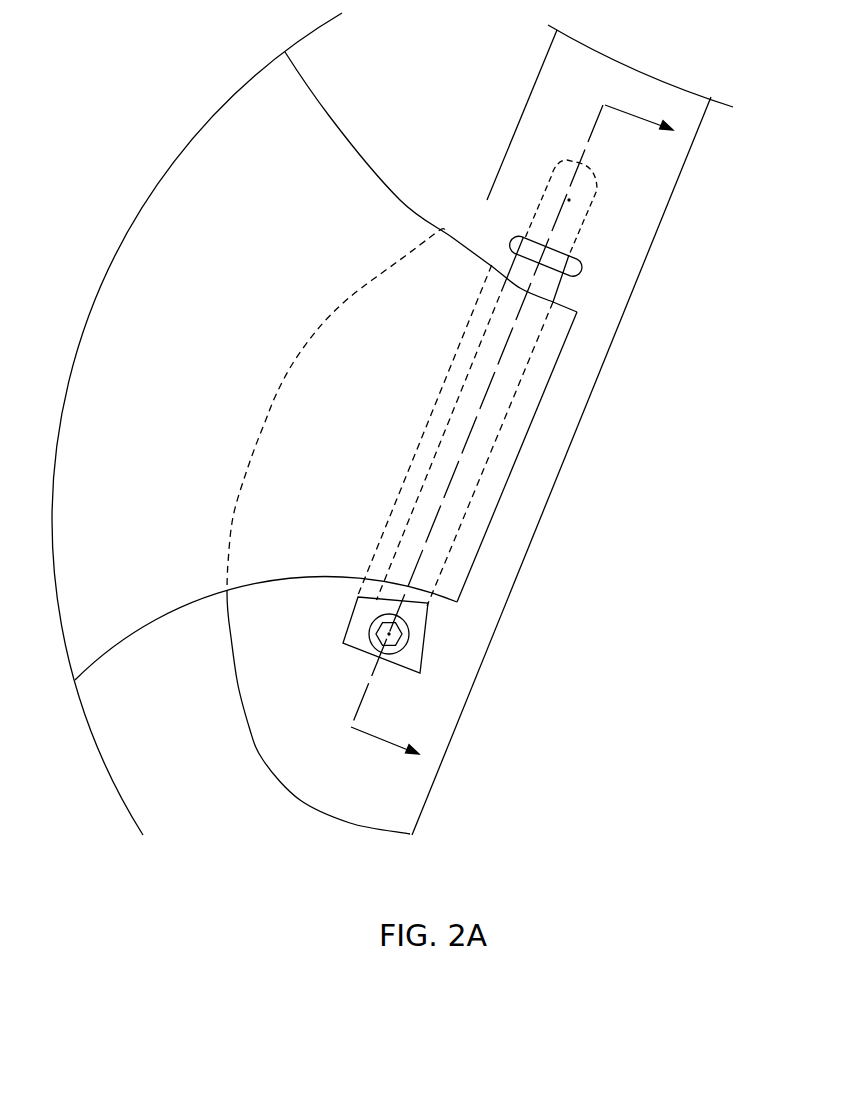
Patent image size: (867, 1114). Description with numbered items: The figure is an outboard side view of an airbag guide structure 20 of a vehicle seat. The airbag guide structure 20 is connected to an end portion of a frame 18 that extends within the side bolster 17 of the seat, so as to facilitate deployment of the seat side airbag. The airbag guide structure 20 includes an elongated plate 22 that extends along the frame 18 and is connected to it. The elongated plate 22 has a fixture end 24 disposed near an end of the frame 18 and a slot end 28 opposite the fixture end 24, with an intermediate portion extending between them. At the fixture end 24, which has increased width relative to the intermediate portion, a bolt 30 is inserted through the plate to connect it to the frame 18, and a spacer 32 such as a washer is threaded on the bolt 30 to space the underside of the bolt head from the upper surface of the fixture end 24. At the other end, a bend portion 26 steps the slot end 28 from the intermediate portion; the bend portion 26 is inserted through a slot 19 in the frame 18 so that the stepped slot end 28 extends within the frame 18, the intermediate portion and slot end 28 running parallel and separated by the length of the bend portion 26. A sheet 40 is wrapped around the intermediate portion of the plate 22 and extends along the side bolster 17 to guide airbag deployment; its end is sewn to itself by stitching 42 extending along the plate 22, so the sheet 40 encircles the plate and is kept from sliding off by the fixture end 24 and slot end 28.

The side bolster 17 is at (384, 78).
The frame 18 is at (647, 263).
The slot 19 is at (580, 258).
The airbag guide structure 20 is at (423, 723).
The elongated plate 22 is at (563, 284).
The fixture end 24 is at (420, 630).
The bend portion 26 is at (531, 247).
The slot end 28 is at (572, 158).
The bolt 30 is at (342, 642).
The spacer 32 is at (342, 642).
The sheet 40 is at (212, 311).
The stitching 42 is at (438, 400).